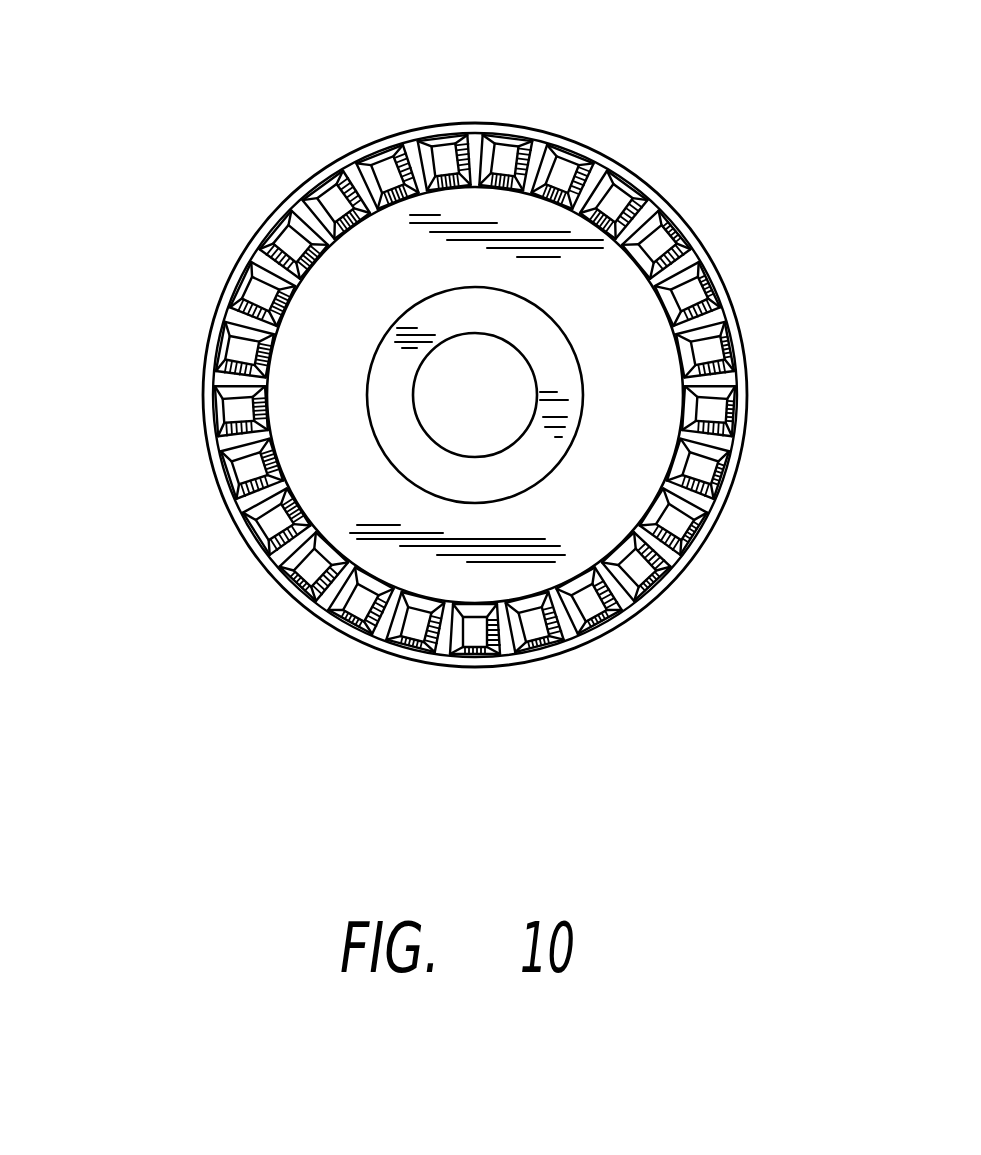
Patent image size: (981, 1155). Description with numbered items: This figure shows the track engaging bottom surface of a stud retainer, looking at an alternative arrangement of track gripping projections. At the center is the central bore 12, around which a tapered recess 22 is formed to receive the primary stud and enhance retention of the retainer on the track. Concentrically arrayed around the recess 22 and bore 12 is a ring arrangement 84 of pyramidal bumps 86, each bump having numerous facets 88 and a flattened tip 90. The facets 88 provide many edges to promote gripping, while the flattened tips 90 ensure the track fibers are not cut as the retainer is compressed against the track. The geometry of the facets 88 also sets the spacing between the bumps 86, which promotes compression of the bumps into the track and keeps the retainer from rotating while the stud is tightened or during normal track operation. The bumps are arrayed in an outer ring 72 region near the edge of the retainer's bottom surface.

The central bore 12 is at (535, 408).
The tapered recess 22 is at (556, 353).
The ring 72 is at (690, 537).
The ring arrangement 84 is at (395, 327).
The pyramidal bumps 86 is at (236, 328).
The facets 88 is at (350, 178).
The flattened tips 90 is at (248, 482).